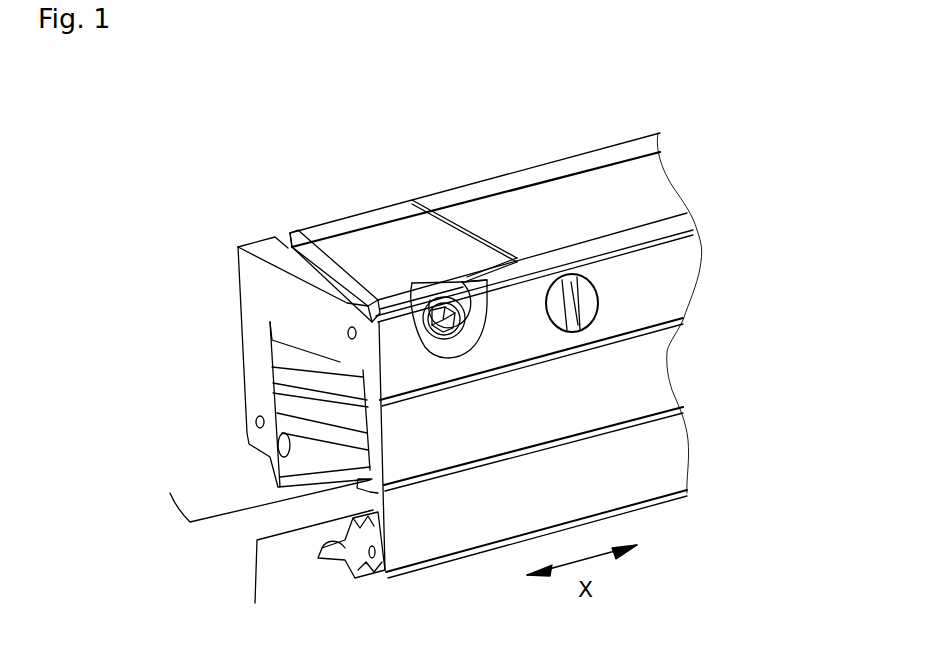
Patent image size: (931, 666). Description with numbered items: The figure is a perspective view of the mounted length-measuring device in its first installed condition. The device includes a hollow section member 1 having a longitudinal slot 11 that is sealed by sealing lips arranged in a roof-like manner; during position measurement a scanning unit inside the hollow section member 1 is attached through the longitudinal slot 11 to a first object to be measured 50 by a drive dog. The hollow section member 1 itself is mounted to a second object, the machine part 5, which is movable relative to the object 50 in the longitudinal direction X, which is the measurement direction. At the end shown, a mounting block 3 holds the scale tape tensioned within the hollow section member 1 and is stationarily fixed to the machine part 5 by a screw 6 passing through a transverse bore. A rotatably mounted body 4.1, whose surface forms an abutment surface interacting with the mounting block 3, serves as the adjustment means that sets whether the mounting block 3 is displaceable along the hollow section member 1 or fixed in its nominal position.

The hollow section member 1 is at (673, 268).
The mounting block 3 is at (370, 252).
The body 4.1 is at (577, 277).
The machine part 5 is at (791, 300).
The screw 6 is at (430, 293).
The longitudinal slot 11 is at (313, 545).
The object to be measured 50 is at (685, 427).